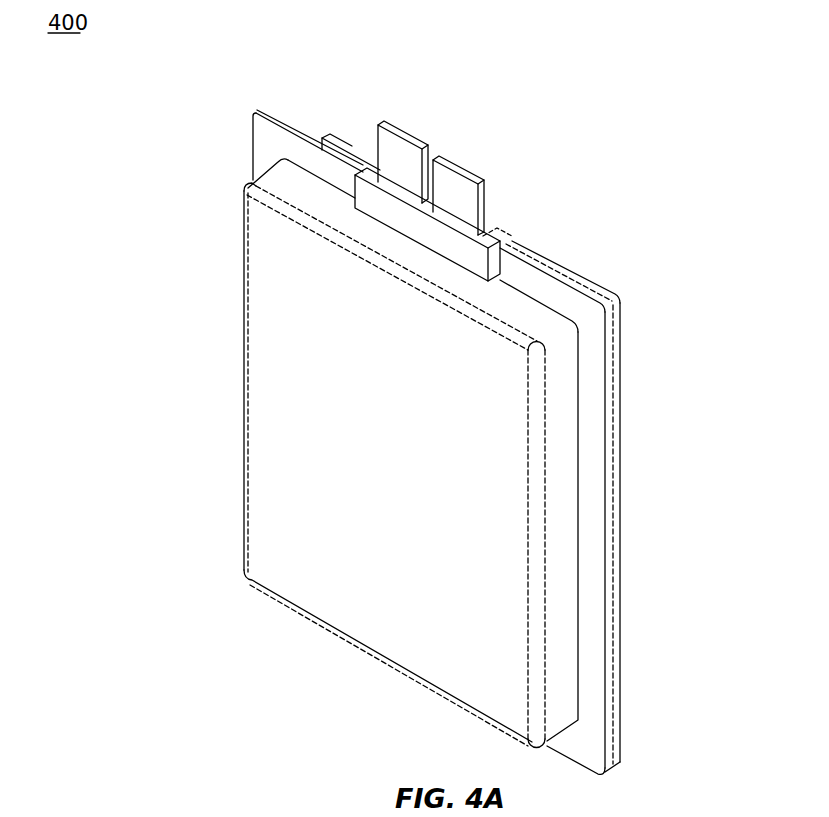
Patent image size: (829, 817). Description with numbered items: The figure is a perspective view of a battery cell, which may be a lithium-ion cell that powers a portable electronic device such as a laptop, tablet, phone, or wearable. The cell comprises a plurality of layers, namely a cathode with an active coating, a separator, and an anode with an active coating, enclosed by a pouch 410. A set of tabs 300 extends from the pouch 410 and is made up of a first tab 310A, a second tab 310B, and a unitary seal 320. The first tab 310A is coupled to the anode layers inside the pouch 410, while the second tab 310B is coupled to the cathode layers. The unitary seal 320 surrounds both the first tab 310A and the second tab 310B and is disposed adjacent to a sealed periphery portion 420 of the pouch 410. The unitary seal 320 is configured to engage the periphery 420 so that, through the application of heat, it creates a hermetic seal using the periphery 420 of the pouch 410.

The pouch 410 is at (262, 357).
The sealed periphery portion 420 is at (253, 127).
The set of tabs 300 is at (388, 96).
The first tab 310A is at (410, 138).
The second tab 310B is at (472, 176).
The unitary seal 320 is at (496, 232).